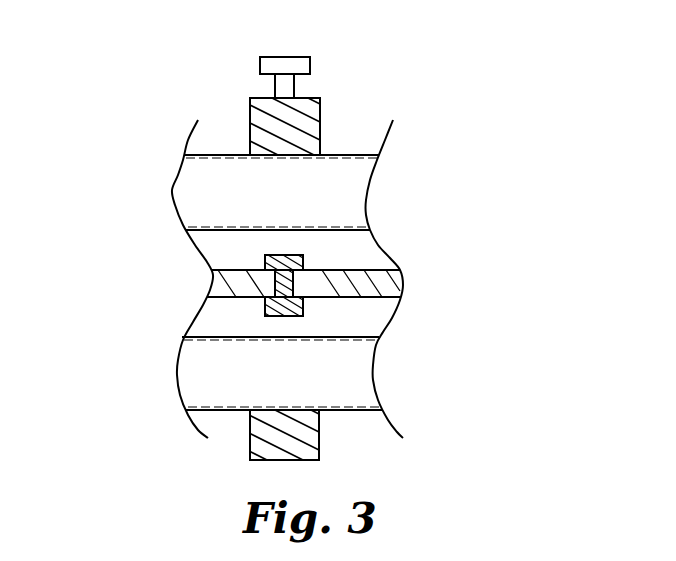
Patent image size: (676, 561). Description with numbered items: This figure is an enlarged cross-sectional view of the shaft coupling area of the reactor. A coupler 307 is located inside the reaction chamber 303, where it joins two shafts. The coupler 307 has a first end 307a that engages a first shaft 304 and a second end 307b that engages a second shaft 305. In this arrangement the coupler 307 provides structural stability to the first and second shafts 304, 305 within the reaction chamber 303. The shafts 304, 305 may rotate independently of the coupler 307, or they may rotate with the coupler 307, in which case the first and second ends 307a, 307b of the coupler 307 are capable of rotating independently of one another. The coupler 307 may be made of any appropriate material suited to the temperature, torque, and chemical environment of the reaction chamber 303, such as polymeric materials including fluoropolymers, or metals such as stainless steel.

The reaction chamber 303 is at (213, 231).
The first shaft 304 is at (213, 278).
The second shaft 305 is at (403, 288).
The coupler 307 is at (296, 286).
The first end 307a is at (276, 278).
The second end 307b is at (296, 279).